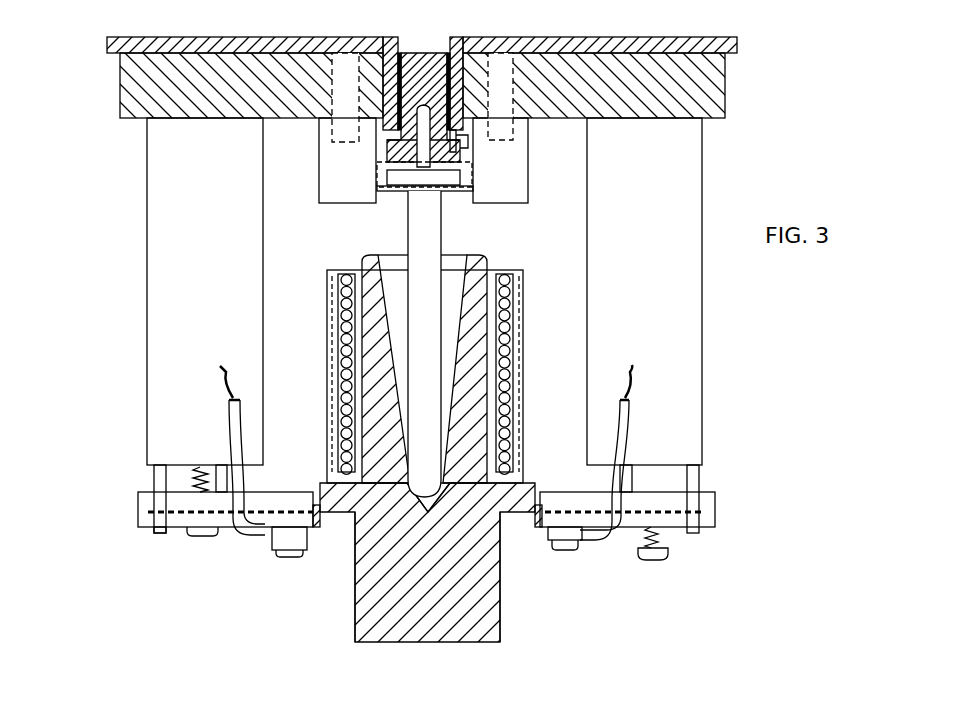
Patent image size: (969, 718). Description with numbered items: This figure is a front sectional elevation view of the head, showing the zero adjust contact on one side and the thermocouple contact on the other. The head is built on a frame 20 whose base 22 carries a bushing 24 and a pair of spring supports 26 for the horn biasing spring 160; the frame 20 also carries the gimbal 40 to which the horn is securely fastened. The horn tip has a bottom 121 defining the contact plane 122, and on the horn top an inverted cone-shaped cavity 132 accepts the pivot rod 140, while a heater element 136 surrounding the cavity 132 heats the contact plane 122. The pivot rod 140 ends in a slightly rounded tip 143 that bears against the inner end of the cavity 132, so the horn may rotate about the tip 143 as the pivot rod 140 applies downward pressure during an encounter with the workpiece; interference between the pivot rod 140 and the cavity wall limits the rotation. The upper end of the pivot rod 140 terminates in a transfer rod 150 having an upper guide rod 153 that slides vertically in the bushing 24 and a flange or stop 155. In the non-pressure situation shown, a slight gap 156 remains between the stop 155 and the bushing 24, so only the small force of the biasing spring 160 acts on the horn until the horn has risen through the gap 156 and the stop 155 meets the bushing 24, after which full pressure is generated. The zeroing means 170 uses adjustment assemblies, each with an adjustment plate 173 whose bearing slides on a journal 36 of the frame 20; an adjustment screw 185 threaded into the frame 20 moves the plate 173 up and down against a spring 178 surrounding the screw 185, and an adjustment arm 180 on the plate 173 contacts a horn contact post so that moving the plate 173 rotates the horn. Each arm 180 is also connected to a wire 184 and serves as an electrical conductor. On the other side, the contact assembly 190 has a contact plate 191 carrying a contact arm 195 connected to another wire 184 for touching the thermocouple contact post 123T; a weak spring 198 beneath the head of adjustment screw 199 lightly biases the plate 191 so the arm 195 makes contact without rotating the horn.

The frame 20 is at (120, 149).
The base 22 is at (122, 88).
The bushing 24 is at (468, 142).
The spring supports 26 is at (318, 182).
The journal 36 is at (153, 483).
The gimbal 40 is at (185, 520).
The bottom of horn tip 121 is at (403, 643).
The contact plane 122 is at (443, 643).
The thermocouple contact posts 123T is at (336, 515).
The inverted cone-shaped cavity 132 is at (455, 278).
The heater element 136 is at (522, 332).
The pivot rod 140 is at (442, 218).
The tip 143 is at (433, 509).
The transfer rod 150 is at (448, 37).
The upper guide rod 153 is at (402, 40).
The stop 155 is at (462, 148).
The gap 156 is at (390, 136).
The horn biasing spring 160 is at (387, 193).
The zero adjustment arms 170 is at (118, 515).
The adjustment plate 173 is at (150, 530).
The spring 178 is at (194, 480).
The adjustment arm 180 is at (320, 545).
The wire 184 is at (224, 407).
The adjustment screw 185 is at (205, 535).
The contact assembly 190 is at (752, 517).
The contact plate 191 is at (690, 530).
The contact arm 195 is at (537, 532).
The weak spring 198 is at (650, 550).
The adjustment screw 199 is at (662, 560).